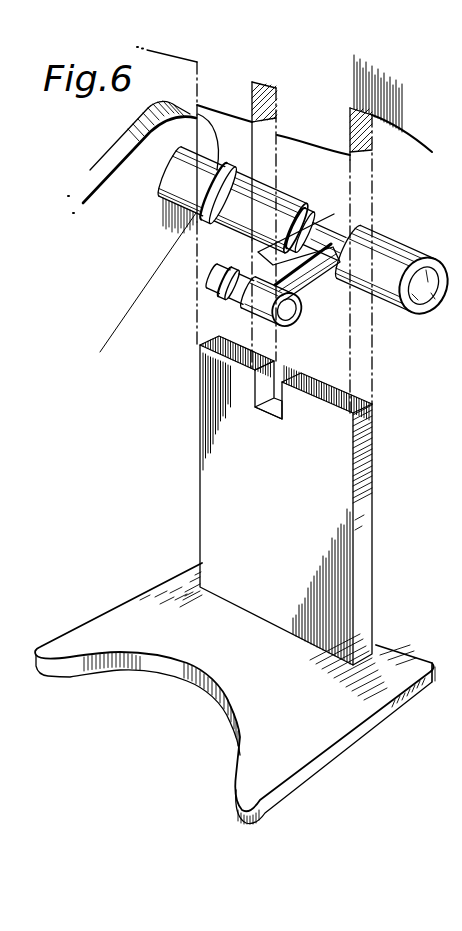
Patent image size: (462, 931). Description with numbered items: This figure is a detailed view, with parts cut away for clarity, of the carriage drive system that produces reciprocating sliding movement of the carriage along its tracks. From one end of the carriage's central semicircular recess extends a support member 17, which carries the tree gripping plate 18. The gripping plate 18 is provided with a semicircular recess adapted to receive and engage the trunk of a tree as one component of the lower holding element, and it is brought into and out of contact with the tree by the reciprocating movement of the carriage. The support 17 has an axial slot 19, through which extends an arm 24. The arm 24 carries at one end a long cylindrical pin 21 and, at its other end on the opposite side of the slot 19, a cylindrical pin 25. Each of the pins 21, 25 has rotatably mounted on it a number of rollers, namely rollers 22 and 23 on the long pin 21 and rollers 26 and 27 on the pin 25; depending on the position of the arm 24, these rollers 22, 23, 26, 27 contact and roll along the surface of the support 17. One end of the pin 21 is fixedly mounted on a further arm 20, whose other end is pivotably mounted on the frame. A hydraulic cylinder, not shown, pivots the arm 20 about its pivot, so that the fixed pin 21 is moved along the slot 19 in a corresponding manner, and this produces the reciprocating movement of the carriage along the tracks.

The support member 17 is at (327, 452).
The tree gripping plate 18 is at (153, 592).
The axial slot 19 is at (281, 379).
The arm 20 is at (120, 184).
The long cylindrical pin 21 is at (331, 226).
The roller 22 is at (300, 197).
The roller 23 is at (380, 243).
The arm 24 is at (317, 275).
The cylindrical pin 25 is at (222, 301).
The roller 26 is at (205, 286).
The roller 27 is at (262, 318).